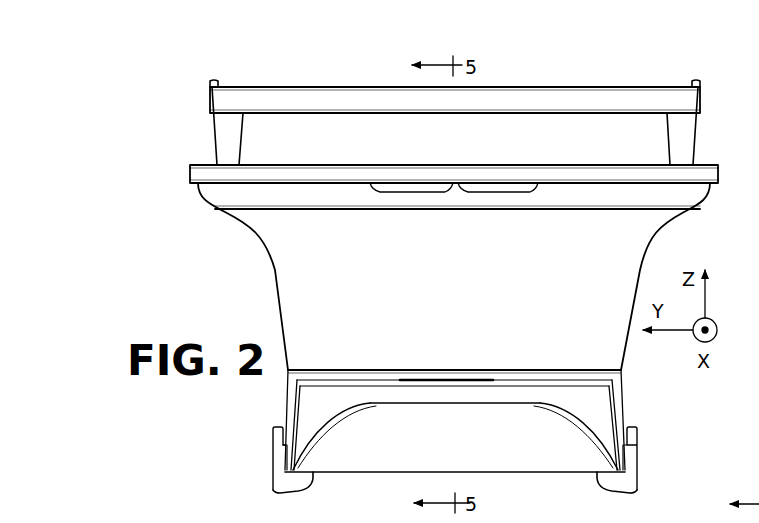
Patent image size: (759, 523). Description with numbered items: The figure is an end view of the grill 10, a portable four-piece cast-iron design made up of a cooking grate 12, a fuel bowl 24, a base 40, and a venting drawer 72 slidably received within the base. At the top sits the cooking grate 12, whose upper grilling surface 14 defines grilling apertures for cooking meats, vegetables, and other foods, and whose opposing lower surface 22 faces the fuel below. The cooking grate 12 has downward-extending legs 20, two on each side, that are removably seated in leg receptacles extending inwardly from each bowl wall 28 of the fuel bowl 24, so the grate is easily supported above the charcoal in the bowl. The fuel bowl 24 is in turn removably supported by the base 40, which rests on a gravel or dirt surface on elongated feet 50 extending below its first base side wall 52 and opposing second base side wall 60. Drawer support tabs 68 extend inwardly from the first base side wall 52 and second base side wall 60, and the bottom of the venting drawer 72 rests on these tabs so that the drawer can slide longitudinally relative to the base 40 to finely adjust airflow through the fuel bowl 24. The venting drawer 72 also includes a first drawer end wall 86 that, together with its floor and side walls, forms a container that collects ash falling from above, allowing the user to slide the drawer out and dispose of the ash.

The grill 10 is at (206, 234).
The cooking grate 12 is at (203, 102).
The upper grilling surface 14 is at (367, 86).
The legs 20 is at (212, 140).
The lower surface 22 is at (516, 116).
The fuel bowl 24 is at (266, 272).
The bowl wall 28 is at (466, 297).
The base 40 is at (264, 464).
The elongated feet 50 is at (290, 493).
The first base side wall 52 is at (626, 406).
The second base side wall 60 is at (285, 406).
The drawer support tabs 68 is at (305, 469).
The venting drawer 72 is at (500, 383).
The first drawer end wall 86 is at (466, 446).